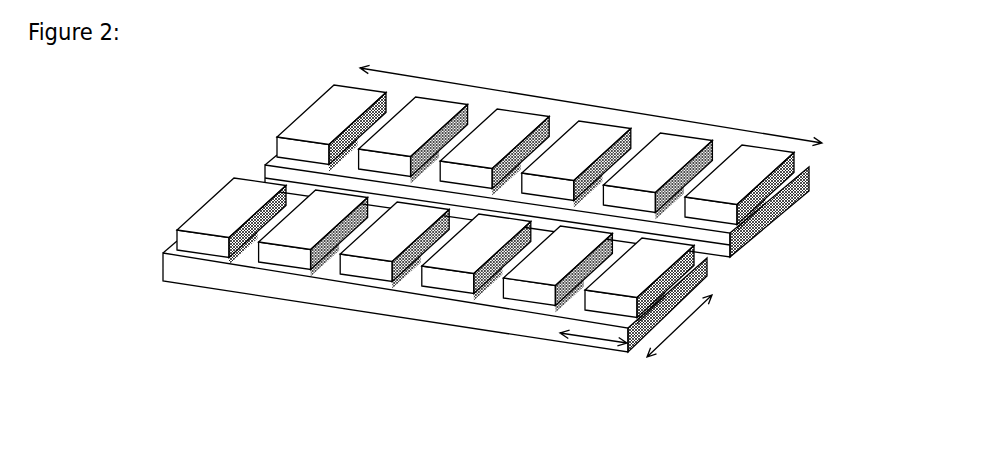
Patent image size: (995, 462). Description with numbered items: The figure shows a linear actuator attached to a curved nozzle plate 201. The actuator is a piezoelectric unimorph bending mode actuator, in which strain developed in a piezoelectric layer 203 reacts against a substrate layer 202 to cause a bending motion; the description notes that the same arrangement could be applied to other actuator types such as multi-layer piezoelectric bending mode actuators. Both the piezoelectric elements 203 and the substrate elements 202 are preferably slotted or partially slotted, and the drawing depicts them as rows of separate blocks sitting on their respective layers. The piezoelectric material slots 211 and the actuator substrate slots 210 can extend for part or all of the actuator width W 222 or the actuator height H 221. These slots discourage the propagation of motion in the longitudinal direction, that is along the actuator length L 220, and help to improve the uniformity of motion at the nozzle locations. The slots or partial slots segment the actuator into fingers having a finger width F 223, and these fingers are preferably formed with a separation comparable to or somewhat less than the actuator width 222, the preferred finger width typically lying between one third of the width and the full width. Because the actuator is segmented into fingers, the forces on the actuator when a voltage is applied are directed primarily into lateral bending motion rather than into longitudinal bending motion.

The nozzle plate 201 is at (713, 270).
The substrate layer 202 is at (183, 272).
The piezoelectric layer 203 is at (232, 197).
The actuator substrate slots 210 is at (338, 252).
The piezoelectric material slots 211 is at (482, 287).
The actuator length 220 is at (637, 112).
The actuator height 221 is at (740, 212).
The actuator width 222 is at (683, 328).
The finger width 223 is at (595, 342).